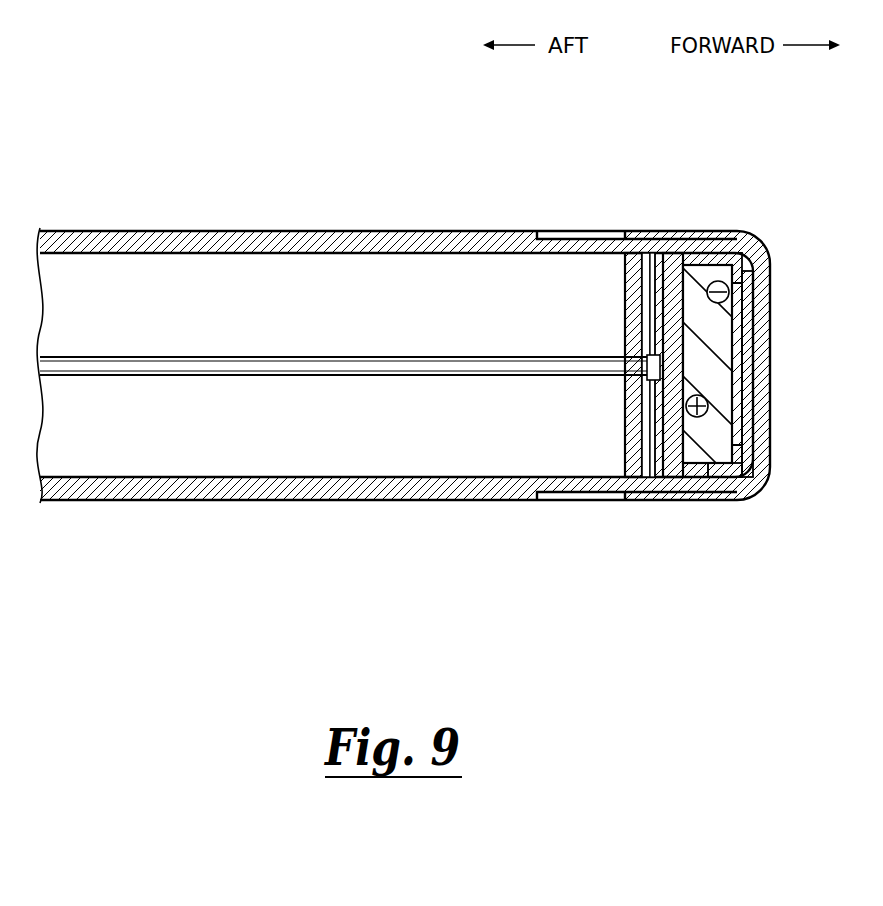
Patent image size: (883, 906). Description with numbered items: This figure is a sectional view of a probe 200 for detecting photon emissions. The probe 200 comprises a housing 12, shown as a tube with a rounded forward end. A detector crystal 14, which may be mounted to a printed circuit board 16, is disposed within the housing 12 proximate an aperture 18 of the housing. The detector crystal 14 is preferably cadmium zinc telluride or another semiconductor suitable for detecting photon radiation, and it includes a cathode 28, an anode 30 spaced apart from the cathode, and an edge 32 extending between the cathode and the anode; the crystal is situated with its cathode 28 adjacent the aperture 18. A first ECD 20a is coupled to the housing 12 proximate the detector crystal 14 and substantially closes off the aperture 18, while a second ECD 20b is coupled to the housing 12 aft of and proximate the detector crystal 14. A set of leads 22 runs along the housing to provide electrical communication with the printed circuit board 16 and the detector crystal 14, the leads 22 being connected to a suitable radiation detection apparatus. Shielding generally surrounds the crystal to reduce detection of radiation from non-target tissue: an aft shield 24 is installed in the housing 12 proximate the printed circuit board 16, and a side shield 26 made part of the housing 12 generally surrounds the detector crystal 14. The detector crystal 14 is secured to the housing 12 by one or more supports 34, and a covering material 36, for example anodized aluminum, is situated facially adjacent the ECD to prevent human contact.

The probe 200 is at (380, 156).
The housing 12 is at (210, 502).
The detector crystal 14 is at (707, 266).
The printed circuit board 16 is at (670, 268).
The aperture 18 is at (772, 261).
The first ECD 20a is at (753, 329).
The second ECD 20b is at (640, 458).
The leads 22 is at (371, 356).
The aft shield 24 is at (624, 429).
The side shield 26 is at (651, 479).
The cathode 28 is at (742, 380).
The anode 30 is at (663, 300).
The edge 32 is at (708, 466).
The supports 34 is at (730, 256).
The covering material 36 is at (772, 409).